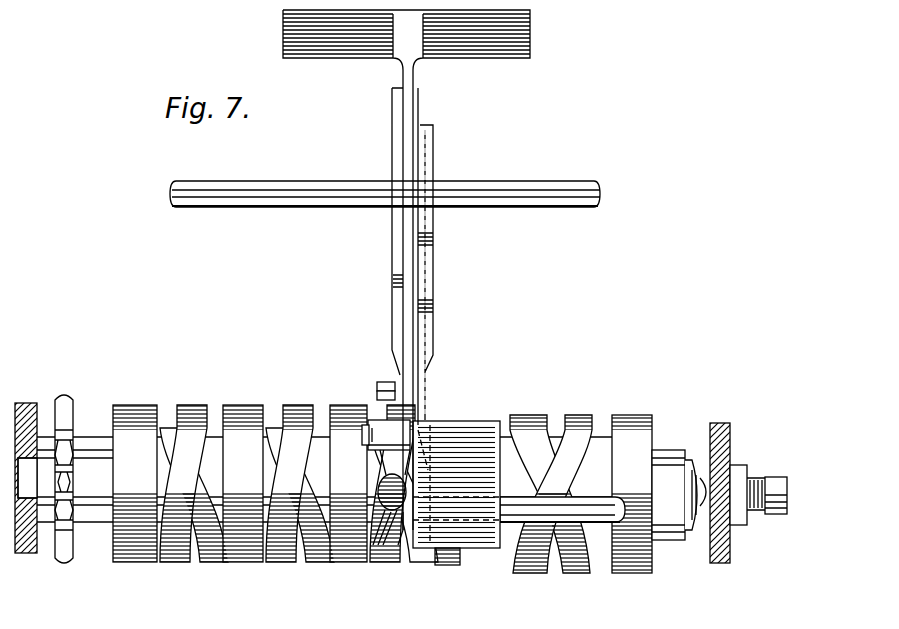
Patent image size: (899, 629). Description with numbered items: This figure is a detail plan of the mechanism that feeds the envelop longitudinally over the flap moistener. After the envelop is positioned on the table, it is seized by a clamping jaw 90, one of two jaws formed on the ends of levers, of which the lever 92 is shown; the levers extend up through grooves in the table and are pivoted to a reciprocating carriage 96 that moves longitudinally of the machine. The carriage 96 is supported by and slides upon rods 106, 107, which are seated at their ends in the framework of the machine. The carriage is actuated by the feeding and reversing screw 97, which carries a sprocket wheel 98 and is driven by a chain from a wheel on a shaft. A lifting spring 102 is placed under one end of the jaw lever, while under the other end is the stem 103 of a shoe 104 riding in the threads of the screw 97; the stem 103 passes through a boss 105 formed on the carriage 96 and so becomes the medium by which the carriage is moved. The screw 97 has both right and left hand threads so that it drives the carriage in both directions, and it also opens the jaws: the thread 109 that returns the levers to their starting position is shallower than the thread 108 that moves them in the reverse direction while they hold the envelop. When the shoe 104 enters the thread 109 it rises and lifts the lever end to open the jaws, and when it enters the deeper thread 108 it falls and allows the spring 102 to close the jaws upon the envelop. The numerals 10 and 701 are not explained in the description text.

The reel hub 10 is at (213, 562).
The clamping jaw 90 is at (523, 58).
The lever 92 is at (393, 235).
The reciprocating carriage 96 is at (488, 425).
The feeding and reversing screw 97 is at (348, 565).
The sprocket wheel 98 is at (62, 565).
The lifting spring 102 is at (392, 330).
The stem 103 is at (380, 478).
The shoe 104 is at (383, 540).
The boss 105 is at (378, 496).
The rod 106 is at (571, 210).
The rod 107 is at (513, 540).
The thread 108 is at (605, 556).
The thread 109 is at (553, 545).
The nut 701 is at (377, 387).